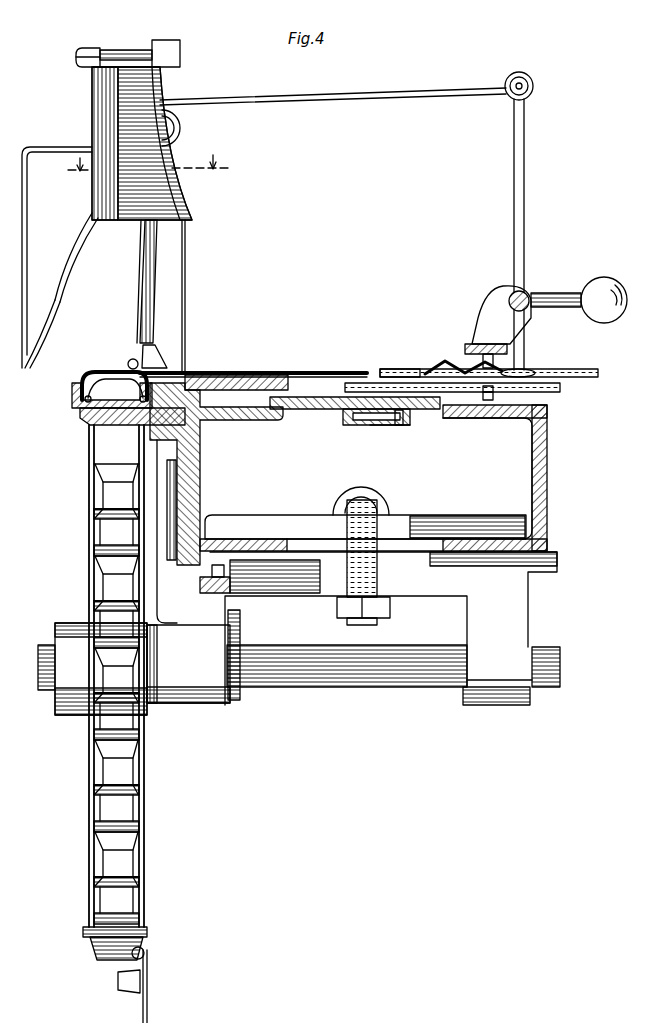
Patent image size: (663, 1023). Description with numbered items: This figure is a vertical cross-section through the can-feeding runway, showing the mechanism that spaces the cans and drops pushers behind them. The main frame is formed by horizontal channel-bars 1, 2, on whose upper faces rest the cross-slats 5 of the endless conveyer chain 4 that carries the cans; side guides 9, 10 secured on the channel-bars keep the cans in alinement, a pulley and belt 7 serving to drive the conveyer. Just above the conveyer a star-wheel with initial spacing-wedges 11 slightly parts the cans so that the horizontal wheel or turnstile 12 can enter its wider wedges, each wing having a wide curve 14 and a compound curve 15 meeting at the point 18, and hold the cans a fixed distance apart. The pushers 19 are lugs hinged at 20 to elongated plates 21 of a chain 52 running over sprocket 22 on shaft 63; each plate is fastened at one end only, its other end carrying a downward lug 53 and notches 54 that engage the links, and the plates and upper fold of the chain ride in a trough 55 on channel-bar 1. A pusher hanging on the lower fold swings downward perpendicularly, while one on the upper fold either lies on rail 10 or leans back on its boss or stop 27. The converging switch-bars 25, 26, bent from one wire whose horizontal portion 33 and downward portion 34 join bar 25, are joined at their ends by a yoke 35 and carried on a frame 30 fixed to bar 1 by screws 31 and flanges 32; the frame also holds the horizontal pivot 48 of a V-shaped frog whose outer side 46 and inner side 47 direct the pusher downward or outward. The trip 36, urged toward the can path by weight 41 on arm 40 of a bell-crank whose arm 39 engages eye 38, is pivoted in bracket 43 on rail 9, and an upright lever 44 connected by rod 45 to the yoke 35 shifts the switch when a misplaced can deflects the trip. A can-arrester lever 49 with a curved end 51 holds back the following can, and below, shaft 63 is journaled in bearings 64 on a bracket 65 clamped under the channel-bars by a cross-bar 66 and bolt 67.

The channel-bar 1 is at (200, 464).
The channel-bar 2 is at (530, 437).
The chain 4 is at (400, 418).
The cross-slats 5 is at (322, 410).
The belt 7 is at (149, 153).
The side rail or guide 9 is at (477, 345).
The side rail or guide 10 is at (290, 386).
The points or wedges of the star-wheel 11 is at (566, 378).
The horizontal wheel or turnstile 12 is at (384, 370).
The wide arc or curve 14 is at (395, 416).
The compound curve 15 is at (371, 382).
The point of the wedge 18 is at (343, 411).
The pushers 19 is at (329, 371).
The hinge 20 is at (92, 992).
The bar or plate 21 is at (103, 369).
The sprocket 22 is at (100, 768).
The switch guide-rail 25 is at (46, 322).
The switch guide-rail 26 is at (141, 280).
The boss or stop 27 is at (159, 366).
The frame 30 is at (190, 310).
The screws 31 is at (207, 591).
The flanges 32 is at (88, 426).
The horizontal portion of switch wire 33 is at (45, 146).
The downward portion of switch wire 34 is at (30, 220).
The yoke 35 is at (174, 130).
The trip 36 is at (438, 368).
The eye 38 is at (537, 369).
The arm of bell-crank lever 39 is at (535, 340).
The arm of bell-crank lever 40 is at (565, 294).
The weight 41 is at (618, 289).
The bracket 43 is at (493, 297).
The upright lever 44 is at (526, 132).
The rod 45 is at (404, 98).
The outer oblique side of frog 46 is at (112, 222).
The inner oblique side of frog 47 is at (189, 212).
The horizontal pivot 48 is at (118, 56).
The can-arrester lever 49 is at (478, 401).
The rounded or curved end 51 is at (482, 398).
The chain or belt 52 is at (115, 390).
The lug or downward projection 53 is at (145, 929).
The notches 54 is at (84, 936).
The runway or trough 55 is at (77, 394).
The shaft 63 is at (287, 678).
The bearings 64 is at (197, 699).
The bracket 65 is at (302, 586).
The cross-bar 66 is at (414, 517).
The bolt 67 is at (336, 513).